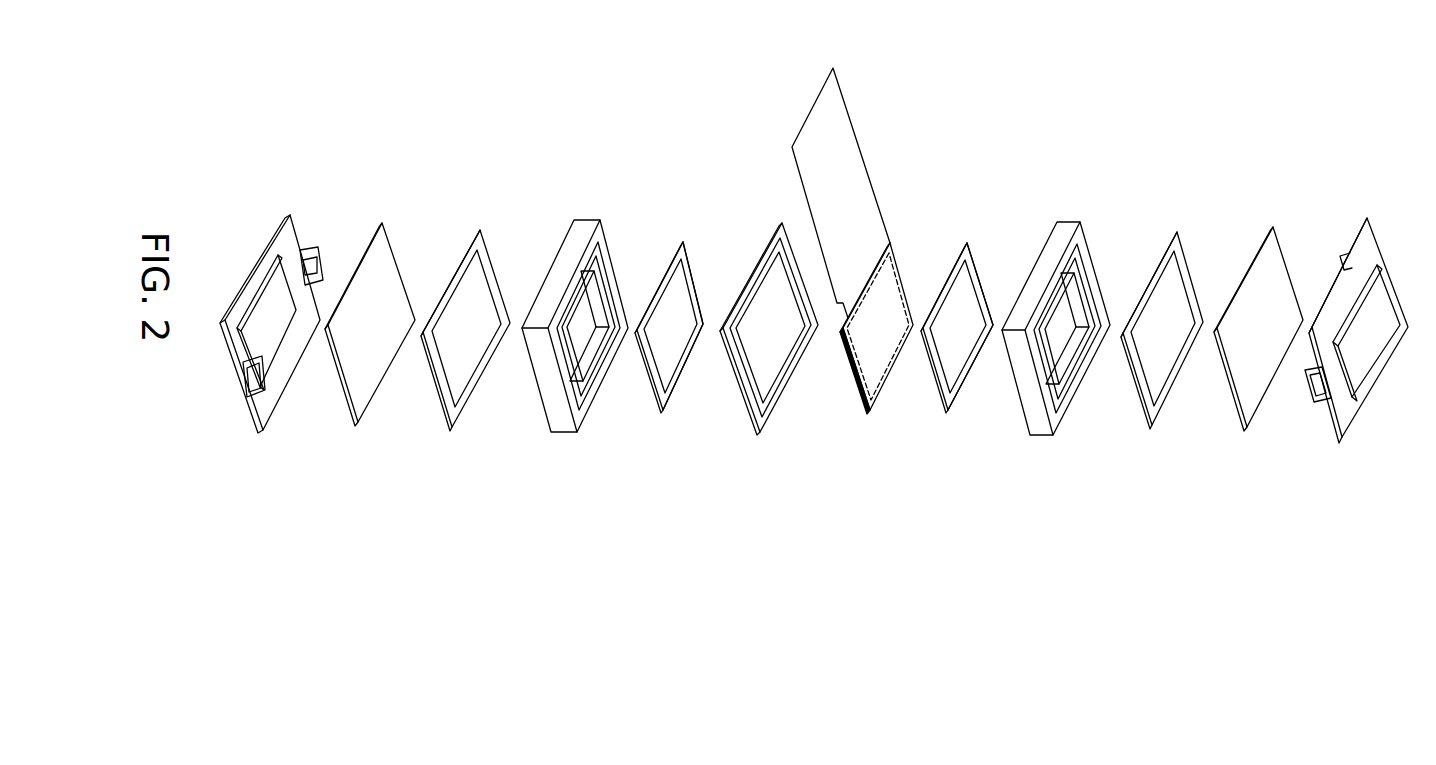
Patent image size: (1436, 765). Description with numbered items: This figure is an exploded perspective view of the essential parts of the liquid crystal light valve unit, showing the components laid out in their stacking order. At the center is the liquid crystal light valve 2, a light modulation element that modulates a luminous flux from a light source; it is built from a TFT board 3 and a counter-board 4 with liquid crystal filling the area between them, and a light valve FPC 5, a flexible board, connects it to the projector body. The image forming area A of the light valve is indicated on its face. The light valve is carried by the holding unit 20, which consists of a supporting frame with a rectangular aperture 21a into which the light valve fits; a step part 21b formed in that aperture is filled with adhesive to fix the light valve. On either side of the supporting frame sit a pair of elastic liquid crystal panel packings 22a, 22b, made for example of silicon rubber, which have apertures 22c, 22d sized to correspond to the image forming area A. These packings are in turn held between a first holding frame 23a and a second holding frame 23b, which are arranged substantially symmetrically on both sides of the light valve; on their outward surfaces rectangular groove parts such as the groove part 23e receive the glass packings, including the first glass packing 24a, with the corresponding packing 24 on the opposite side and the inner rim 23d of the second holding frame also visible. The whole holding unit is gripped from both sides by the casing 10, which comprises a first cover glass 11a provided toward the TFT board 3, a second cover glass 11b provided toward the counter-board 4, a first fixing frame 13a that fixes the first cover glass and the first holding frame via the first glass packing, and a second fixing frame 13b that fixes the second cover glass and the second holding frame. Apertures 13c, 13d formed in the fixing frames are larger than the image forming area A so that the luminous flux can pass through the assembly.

The liquid crystal light valve 2 is at (872, 417).
The TFT board 3 is at (890, 358).
The counter-board 4 is at (853, 377).
The light valve FPC 5 is at (843, 113).
The image forming area A is at (908, 277).
The casing 10 is at (330, 233).
The first cover glass 11a is at (1245, 380).
The second cover glass 11b is at (375, 393).
The first fixing frame 13a is at (1380, 237).
The second fixing frame 13b is at (273, 220).
The aperture 13c is at (1375, 307).
The aperture 13d is at (280, 337).
The holding unit 20 is at (710, 157).
The aperture 21a is at (790, 298).
The step part 21b is at (788, 297).
The liquid crystal panel packing 22a is at (947, 410).
The liquid crystal panel packing 22b is at (660, 408).
The aperture 22c is at (977, 333).
The aperture 22d is at (692, 332).
The first holding frame 23a is at (1037, 437).
The second holding frame 23b is at (555, 433).
The block rim 23d is at (610, 280).
The groove part 23e is at (1090, 263).
The seal frame 24 is at (492, 257).
The first glass packing 24a is at (1190, 255).